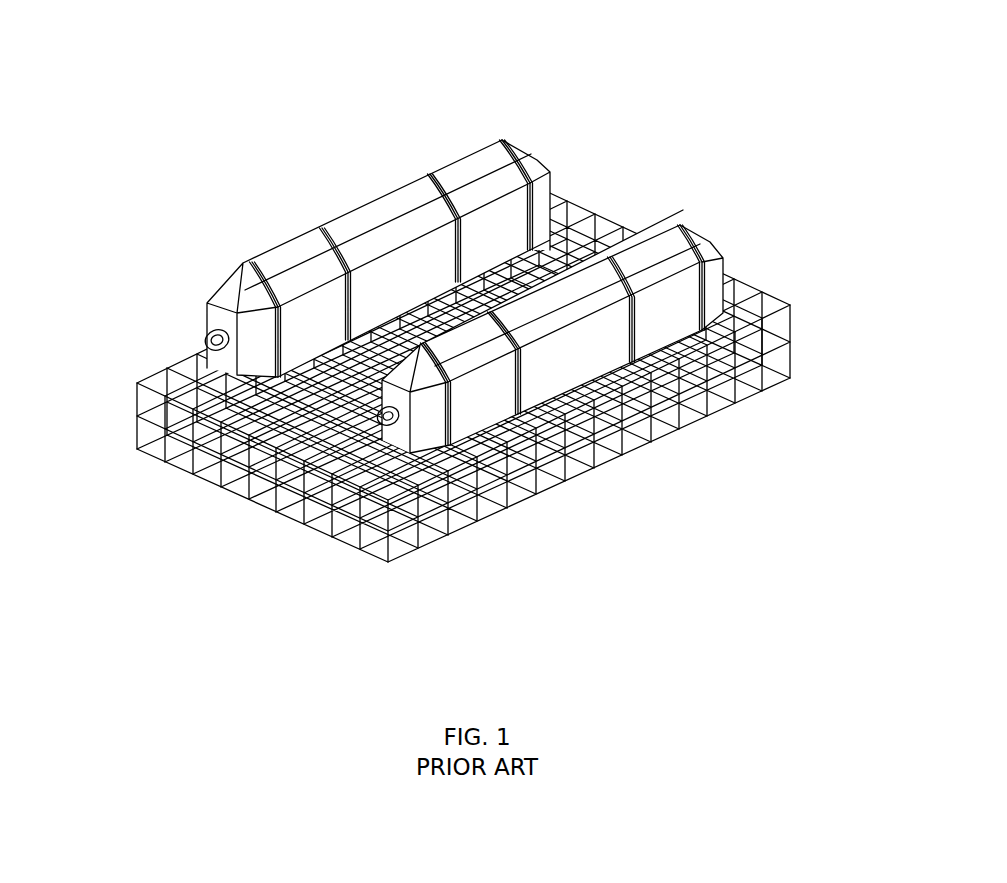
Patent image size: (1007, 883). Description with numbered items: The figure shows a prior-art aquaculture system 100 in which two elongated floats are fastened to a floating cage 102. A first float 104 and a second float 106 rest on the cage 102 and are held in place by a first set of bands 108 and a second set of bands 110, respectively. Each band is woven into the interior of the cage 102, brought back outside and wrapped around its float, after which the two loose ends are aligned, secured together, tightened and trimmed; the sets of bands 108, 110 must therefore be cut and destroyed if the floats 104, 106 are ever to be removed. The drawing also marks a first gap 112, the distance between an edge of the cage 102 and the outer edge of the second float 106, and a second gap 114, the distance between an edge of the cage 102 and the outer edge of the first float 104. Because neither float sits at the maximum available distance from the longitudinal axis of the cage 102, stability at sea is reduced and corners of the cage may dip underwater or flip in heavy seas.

The aquaculture system 100 is at (622, 100).
The cage 102 is at (462, 498).
The first float 104 is at (230, 290).
The second float 106 is at (707, 240).
The first set of bands 108 is at (527, 152).
The second set of bands 110 is at (632, 457).
The first gap 112 is at (360, 530).
The second gap 114 is at (187, 352).